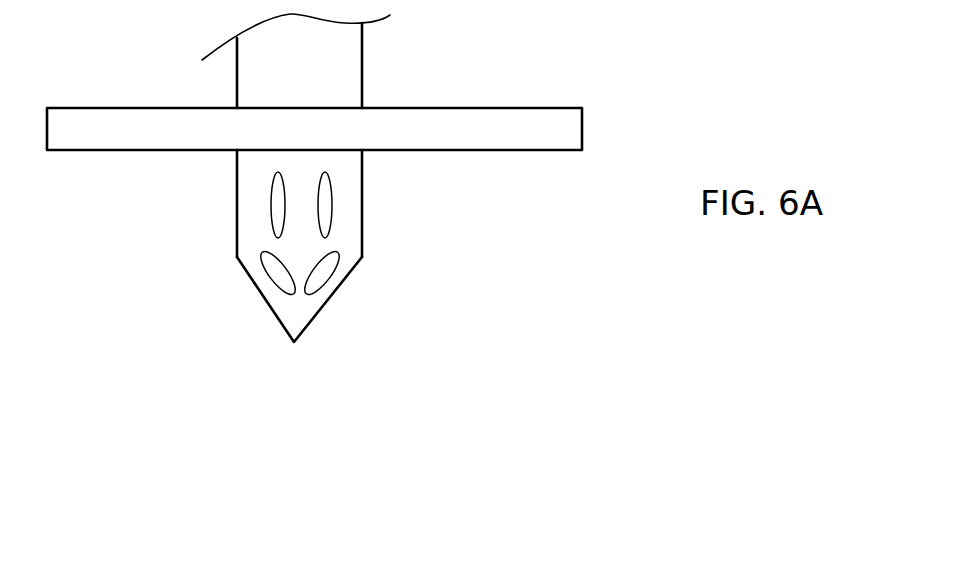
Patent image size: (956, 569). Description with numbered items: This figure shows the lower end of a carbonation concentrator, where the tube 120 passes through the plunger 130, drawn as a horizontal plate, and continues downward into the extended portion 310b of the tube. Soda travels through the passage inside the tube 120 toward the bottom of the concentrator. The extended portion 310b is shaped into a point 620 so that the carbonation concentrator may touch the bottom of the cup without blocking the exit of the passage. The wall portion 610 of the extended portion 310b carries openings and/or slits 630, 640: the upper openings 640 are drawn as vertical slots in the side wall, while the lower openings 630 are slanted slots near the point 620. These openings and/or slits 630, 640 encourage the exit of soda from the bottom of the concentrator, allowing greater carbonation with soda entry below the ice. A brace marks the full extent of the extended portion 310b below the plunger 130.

The tube 120 is at (317, 72).
The plunger 130 is at (498, 115).
The extended portion 310b is at (352, 259).
The body 610 is at (224, 192).
The point 620 is at (230, 296).
The openings and/or slits 630 is at (277, 277).
The openings and/or slits 640 is at (272, 217).